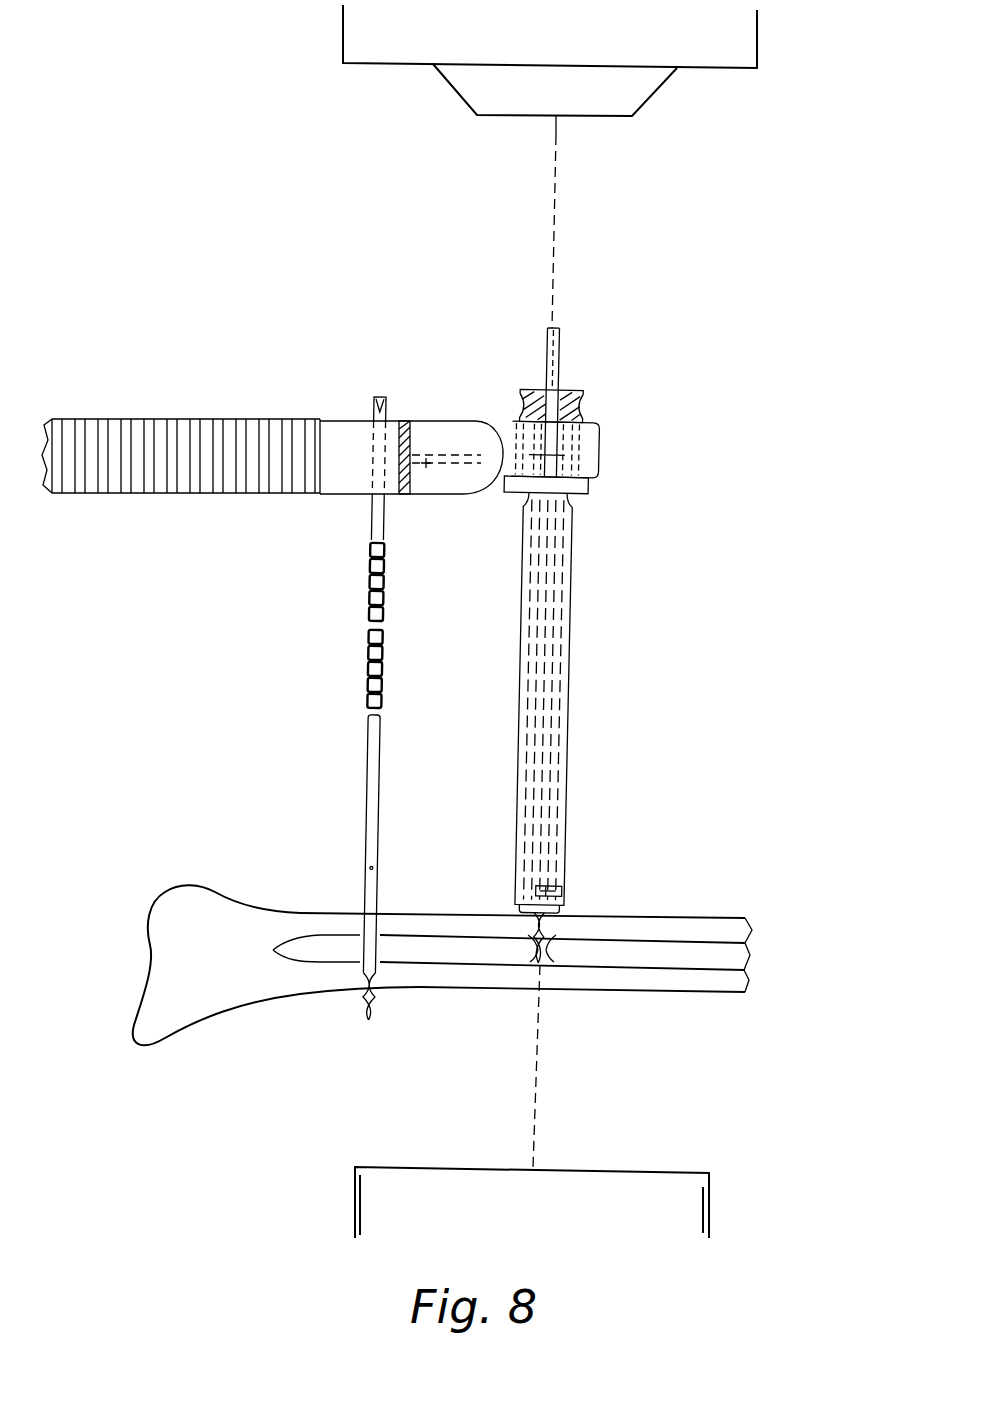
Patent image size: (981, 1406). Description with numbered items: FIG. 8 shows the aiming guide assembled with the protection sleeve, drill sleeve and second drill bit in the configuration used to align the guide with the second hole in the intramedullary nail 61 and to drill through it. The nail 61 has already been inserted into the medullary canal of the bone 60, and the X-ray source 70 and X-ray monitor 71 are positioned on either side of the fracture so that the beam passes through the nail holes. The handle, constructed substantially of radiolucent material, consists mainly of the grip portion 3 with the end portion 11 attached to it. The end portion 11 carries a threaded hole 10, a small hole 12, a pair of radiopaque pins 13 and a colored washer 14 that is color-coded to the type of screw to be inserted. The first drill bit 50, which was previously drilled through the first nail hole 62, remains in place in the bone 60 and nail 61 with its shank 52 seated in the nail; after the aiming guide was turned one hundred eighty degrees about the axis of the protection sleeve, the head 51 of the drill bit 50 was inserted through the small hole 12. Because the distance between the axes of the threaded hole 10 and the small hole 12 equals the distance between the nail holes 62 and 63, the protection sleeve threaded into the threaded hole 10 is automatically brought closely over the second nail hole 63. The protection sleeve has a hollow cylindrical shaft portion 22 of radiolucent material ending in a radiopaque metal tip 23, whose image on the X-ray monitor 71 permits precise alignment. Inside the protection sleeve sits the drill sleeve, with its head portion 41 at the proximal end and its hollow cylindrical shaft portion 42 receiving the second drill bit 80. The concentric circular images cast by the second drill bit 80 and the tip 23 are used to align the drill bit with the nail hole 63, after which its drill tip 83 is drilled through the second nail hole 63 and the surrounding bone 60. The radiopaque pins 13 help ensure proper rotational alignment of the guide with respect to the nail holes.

The X-ray source 70 is at (714, 23).
The grip portion 3 is at (233, 416).
The small hole 12 is at (369, 461).
The head 51 is at (382, 395).
The colored washer 14 is at (406, 420).
The radiopaque pins 13 is at (430, 468).
The head portion 41 is at (583, 402).
The threaded hole 10 is at (586, 440).
The end portion 11 is at (603, 450).
The hollow cylindrical shaft portion 22 is at (572, 798).
The hollow cylindrical shaft portion 42 is at (554, 703).
The second drill bit 80 is at (553, 603).
The tip 23 is at (568, 910).
The drill tip 83 is at (551, 948).
The drill bit 50 is at (345, 664).
The shank 52 is at (363, 758).
The nail hole 62 is at (358, 969).
The bone 60 is at (312, 906).
The intramedullary nail 61 is at (696, 959).
The second nail hole 63 is at (535, 968).
The X-ray monitor 71 is at (694, 1212).